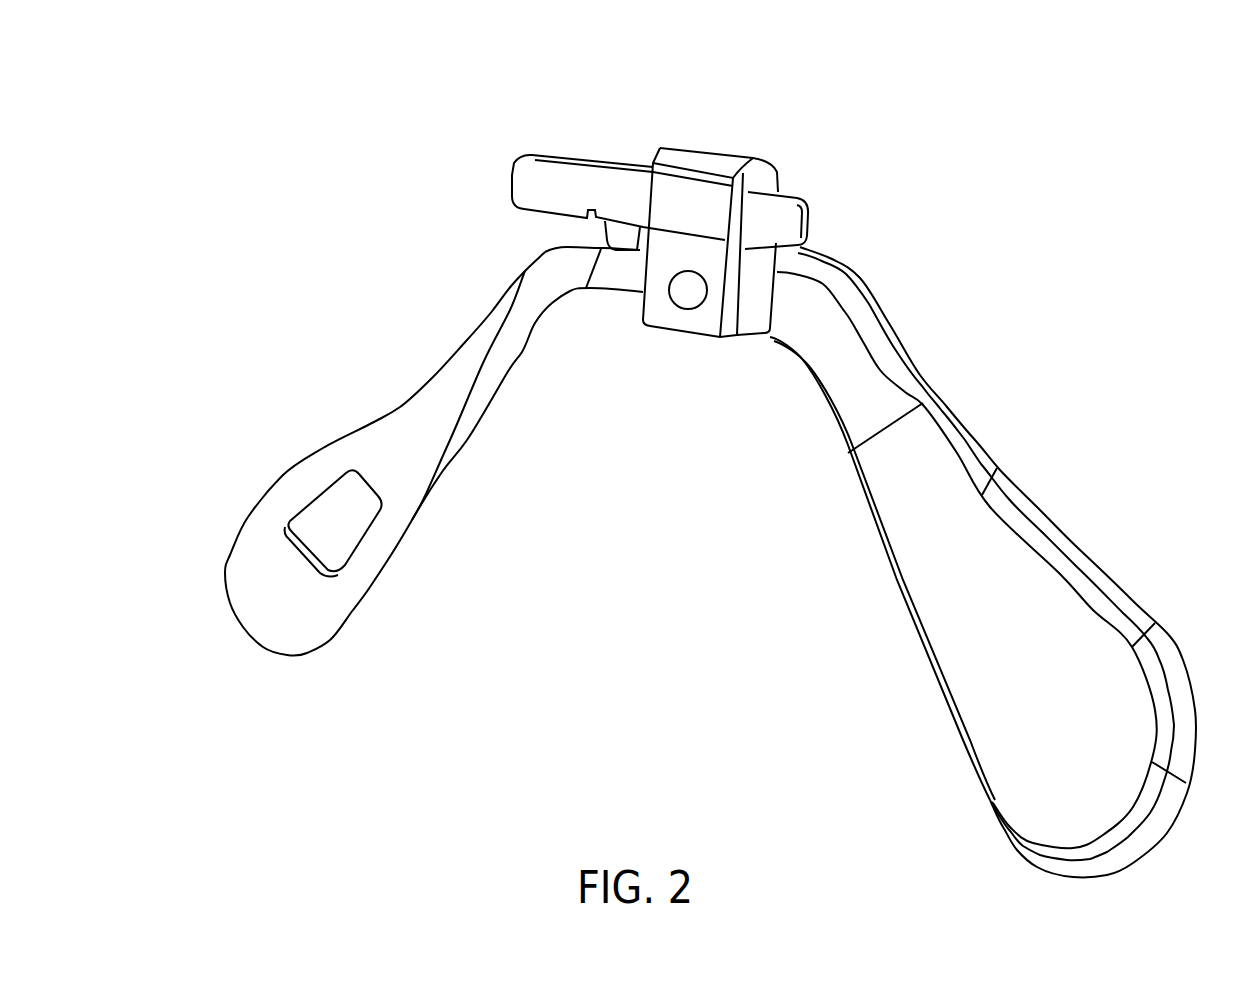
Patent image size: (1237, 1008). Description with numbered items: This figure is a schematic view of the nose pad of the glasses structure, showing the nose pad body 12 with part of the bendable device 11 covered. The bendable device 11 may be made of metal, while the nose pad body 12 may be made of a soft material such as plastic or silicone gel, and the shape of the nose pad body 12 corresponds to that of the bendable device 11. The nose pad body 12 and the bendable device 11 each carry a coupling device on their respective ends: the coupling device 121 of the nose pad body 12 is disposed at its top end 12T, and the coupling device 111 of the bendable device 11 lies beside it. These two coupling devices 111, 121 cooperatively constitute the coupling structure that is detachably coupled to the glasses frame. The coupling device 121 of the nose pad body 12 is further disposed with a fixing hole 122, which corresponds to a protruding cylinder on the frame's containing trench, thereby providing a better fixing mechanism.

The bendable device 11 is at (297, 490).
The coupling device 111 is at (640, 270).
The nose pad body 12 is at (1051, 620).
The top end 12T is at (730, 158).
The coupling device 121 is at (717, 267).
The fixing hole 122 is at (688, 295).